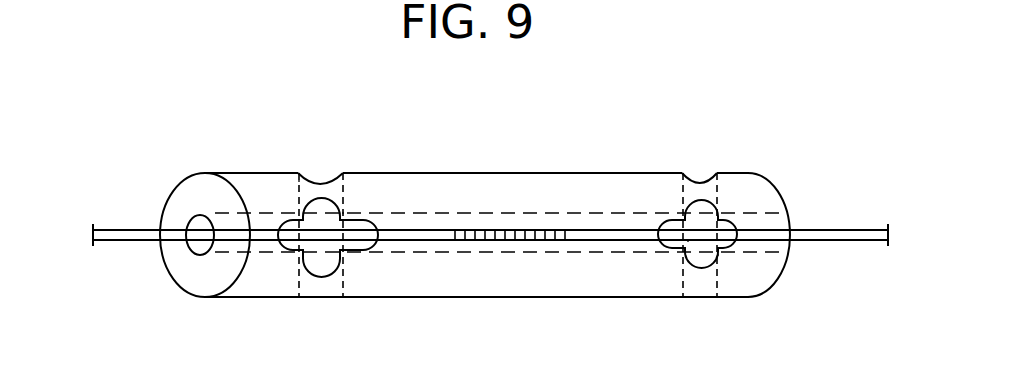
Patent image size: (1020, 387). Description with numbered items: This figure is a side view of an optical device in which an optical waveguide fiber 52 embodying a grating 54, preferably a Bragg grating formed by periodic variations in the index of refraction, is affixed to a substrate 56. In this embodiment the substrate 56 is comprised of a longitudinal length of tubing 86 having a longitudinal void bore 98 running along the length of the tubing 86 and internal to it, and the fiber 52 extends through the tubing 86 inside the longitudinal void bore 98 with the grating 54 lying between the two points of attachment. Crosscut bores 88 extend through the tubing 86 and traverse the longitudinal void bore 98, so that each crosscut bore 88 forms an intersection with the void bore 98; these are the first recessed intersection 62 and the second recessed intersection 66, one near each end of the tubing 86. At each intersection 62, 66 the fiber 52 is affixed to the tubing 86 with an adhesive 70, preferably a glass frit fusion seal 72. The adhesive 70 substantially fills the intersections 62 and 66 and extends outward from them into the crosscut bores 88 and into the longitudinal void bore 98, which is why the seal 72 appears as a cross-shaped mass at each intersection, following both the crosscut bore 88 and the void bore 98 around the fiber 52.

The optical waveguide fiber 52 is at (835, 215).
The grating 54 is at (505, 230).
The substrate 56 is at (613, 170).
The first recessed intersection 62 is at (343, 212).
The second recessed intersection 66 is at (718, 255).
The adhesive 70 is at (302, 178).
The glass frit fusion seal 72 is at (303, 250).
The tubing 86 is at (171, 280).
The crosscut bores 88 is at (318, 305).
The longitudinal void bore 98 is at (203, 228).